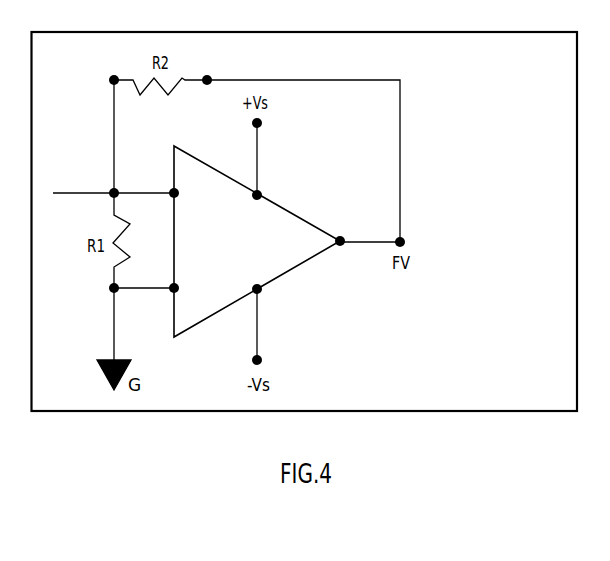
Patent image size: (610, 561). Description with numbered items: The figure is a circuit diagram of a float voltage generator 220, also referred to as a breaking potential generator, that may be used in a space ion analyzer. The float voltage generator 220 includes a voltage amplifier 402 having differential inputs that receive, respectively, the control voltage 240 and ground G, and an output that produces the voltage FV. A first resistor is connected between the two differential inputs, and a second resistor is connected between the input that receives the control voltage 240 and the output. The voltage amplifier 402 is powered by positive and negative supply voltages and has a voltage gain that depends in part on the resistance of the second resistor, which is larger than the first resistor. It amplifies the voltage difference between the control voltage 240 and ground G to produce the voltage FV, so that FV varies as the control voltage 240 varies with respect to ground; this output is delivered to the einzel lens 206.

The float voltage generator 220 is at (488, 411).
The control voltage 240 is at (82, 193).
The voltage amplifier 402 is at (240, 252).
The einzel lens 206 is at (482, 243).